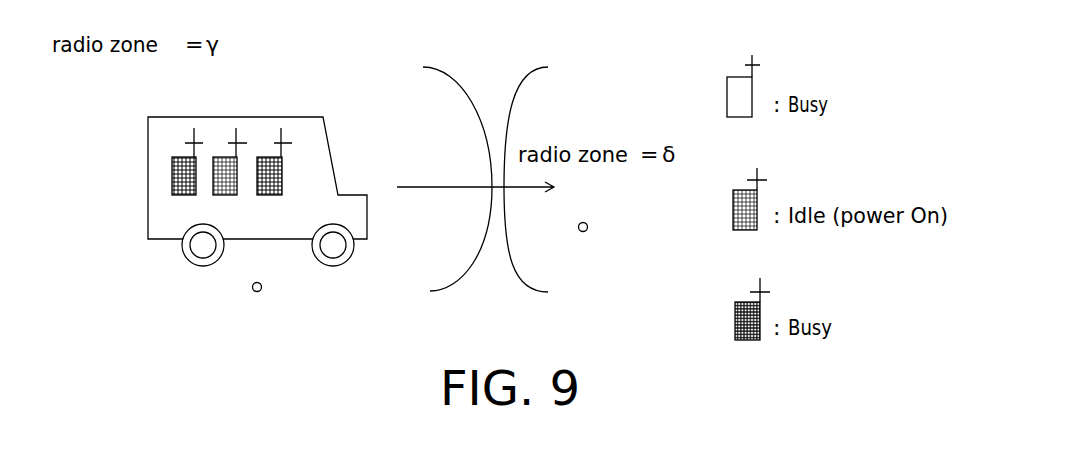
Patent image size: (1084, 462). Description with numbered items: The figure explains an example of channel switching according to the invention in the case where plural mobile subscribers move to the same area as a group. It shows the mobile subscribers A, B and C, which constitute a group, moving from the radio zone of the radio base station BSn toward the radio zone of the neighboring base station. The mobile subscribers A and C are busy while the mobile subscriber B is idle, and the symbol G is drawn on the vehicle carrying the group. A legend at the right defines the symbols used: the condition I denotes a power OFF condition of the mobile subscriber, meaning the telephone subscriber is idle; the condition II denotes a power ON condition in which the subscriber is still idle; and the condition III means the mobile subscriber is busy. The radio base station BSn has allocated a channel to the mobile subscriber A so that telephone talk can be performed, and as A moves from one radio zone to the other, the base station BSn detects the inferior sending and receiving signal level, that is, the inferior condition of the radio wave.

The mobile subscriber A is at (181, 161).
The mobile subscriber B is at (227, 161).
The mobile subscriber C is at (274, 161).
The mobile station group / vehicle G is at (330, 212).
The radio base station BSn is at (267, 305).
The condition I is at (728, 86).
The condition II is at (731, 199).
The condition III is at (732, 309).